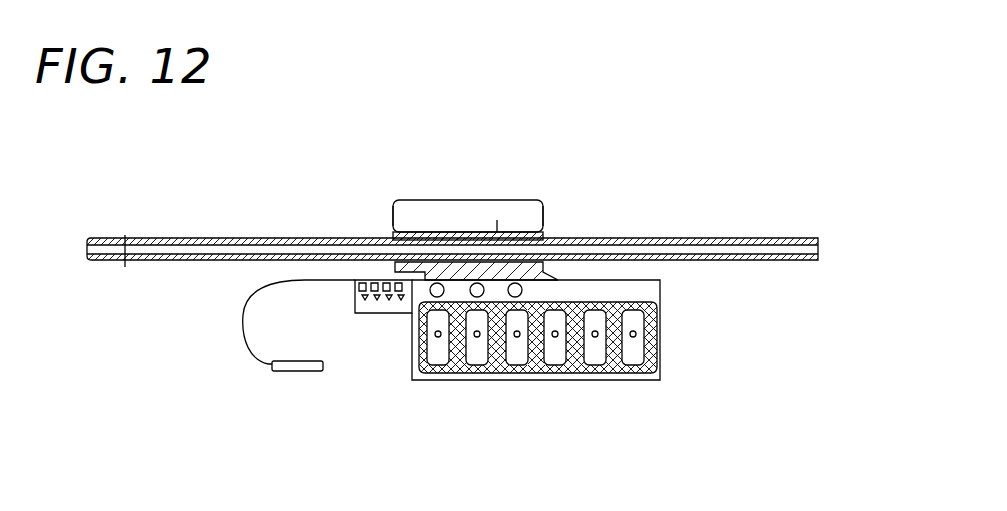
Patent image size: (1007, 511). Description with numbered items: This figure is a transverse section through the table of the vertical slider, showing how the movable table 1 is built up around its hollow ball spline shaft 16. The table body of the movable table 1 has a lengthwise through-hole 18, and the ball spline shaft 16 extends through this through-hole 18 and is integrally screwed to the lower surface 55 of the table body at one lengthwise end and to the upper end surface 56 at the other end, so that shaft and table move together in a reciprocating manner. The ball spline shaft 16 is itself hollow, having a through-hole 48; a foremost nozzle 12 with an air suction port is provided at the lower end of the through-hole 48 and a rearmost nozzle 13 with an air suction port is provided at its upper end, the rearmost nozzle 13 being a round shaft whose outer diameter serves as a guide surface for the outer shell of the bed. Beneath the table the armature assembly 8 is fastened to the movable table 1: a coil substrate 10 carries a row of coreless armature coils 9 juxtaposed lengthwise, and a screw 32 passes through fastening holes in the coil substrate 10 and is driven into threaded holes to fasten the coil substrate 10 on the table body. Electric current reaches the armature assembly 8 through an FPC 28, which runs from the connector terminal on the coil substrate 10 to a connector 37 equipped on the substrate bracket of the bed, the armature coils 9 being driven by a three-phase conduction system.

The movable table 1 is at (456, 200).
The armature assembly 8 is at (633, 382).
The armature coils 9 is at (470, 378).
The coil substrate 10 is at (628, 293).
The foremost nozzle 12 is at (791, 246).
The rearmost nozzle 13 is at (107, 244).
The ball spline shaft 16 is at (669, 240).
The lengthwise through-hole 18 is at (527, 200).
The FPC (flexible printed circuits) 28 is at (240, 346).
The screw 32 is at (530, 266).
The connector 37 is at (375, 276).
The through-hole 48 is at (220, 244).
The lower surface 55 is at (547, 212).
The upper end surface 56 is at (391, 205).